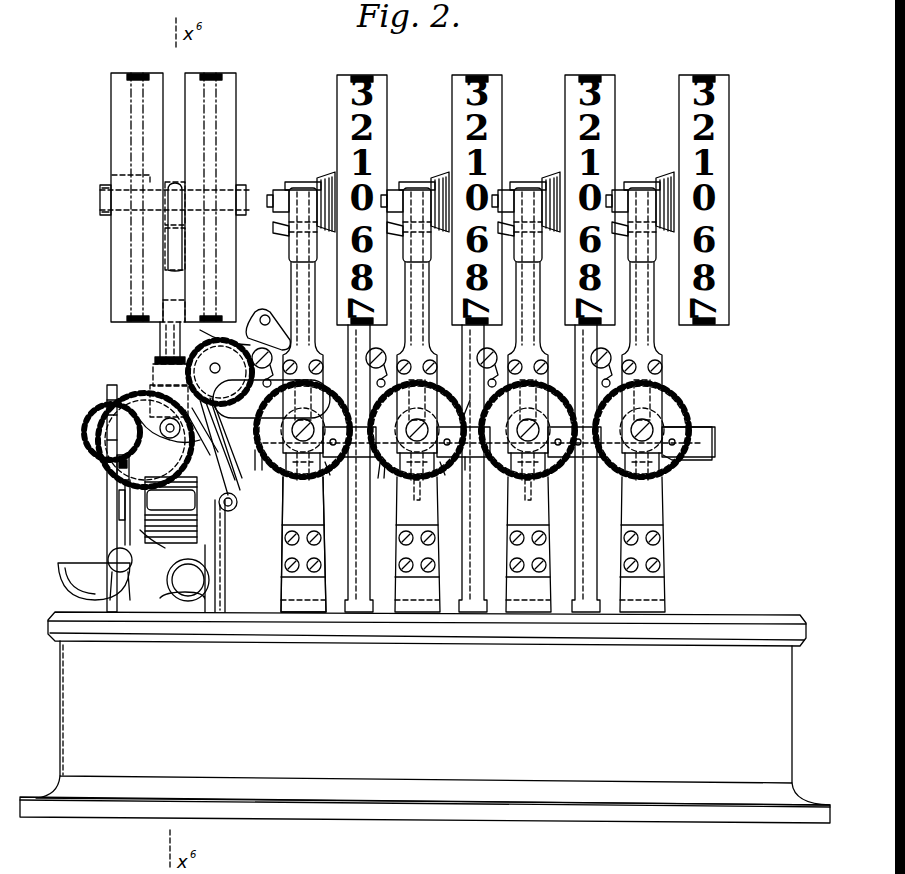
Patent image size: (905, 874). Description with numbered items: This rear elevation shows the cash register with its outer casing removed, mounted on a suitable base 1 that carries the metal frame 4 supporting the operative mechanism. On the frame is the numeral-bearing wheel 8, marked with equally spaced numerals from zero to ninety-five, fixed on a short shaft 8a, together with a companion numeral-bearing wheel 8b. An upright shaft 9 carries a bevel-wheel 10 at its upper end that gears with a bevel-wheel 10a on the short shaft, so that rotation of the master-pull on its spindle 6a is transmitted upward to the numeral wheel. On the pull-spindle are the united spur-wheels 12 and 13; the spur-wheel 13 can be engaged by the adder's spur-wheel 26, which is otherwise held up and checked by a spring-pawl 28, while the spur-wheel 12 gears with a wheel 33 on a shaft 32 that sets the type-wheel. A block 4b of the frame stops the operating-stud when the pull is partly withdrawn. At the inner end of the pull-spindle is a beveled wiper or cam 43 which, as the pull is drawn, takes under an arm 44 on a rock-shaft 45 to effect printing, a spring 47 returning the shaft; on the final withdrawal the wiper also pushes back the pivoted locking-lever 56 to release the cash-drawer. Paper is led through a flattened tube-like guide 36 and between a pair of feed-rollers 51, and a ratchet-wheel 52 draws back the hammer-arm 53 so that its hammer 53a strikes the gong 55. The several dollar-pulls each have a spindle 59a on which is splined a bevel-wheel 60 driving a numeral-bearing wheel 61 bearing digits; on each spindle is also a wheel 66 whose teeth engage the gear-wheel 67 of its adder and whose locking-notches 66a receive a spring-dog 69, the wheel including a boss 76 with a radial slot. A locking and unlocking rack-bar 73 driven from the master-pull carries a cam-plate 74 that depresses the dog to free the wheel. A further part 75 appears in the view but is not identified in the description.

The base 1 is at (425, 717).
The metal frame 4 is at (324, 509).
The block 4b is at (140, 396).
The spindle of the master-pull 6a is at (200, 423).
The numeral-bearing wheel 8 is at (111, 129).
The short shaft 8a is at (100, 198).
The numeral-bearing wheel 8b is at (239, 122).
The upright shaft 9 is at (160, 334).
The bevel-wheel 10 is at (150, 222).
The bevel-wheel 10a is at (200, 180).
The spur-wheel 12 is at (170, 442).
The spur-wheel 13 is at (118, 438).
The spur-wheel 26 is at (150, 366).
The spring-pawl 28 is at (263, 314).
The shaft 32 is at (225, 369).
The wheel 33 is at (220, 368).
The flattened tube-like guide 36 is at (140, 533).
The wiper or cam 43 is at (169, 402).
The arm 44 is at (233, 486).
The rock-shaft 45 is at (238, 503).
The spring 47 is at (205, 557).
The feed-rollers 51 is at (152, 505).
The ratchet-wheel 52 is at (117, 462).
The hammer-arm 53 is at (119, 509).
The hammer 53a is at (135, 570).
The gong 55 is at (80, 566).
The locking-lever 56 is at (226, 472).
The spindle of the dollar-pull 59a is at (670, 468).
The bevel-wheel 60 is at (705, 409).
The numeral-bearing wheel 61 is at (388, 116).
The wheel 66 is at (348, 395).
The locking-notches 66a is at (430, 440).
The gear-wheel 67 is at (473, 360).
The spring-dog 69 is at (420, 495).
The locking and unlocking rack-bar 73 is at (477, 474).
The cam-plate 74 is at (326, 478).
The lever 75 is at (280, 492).
The boss 76 is at (570, 415).